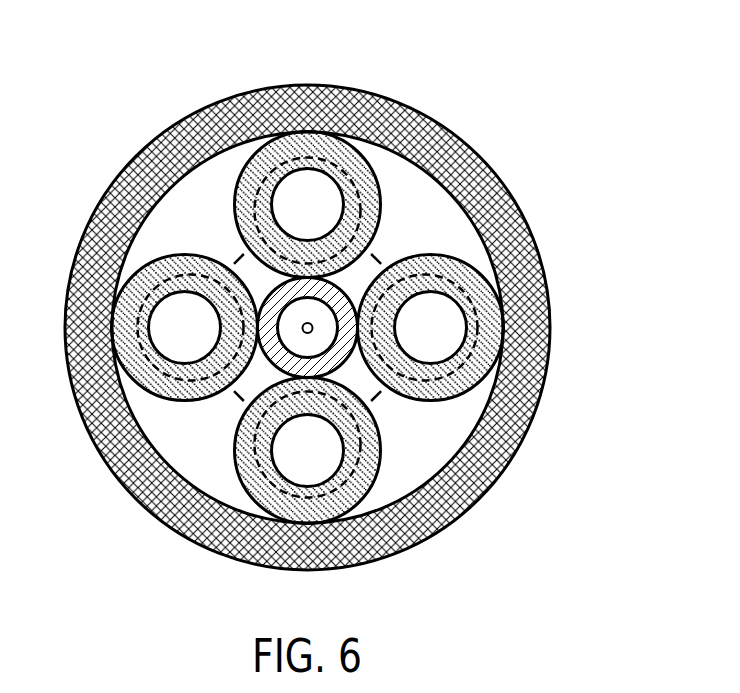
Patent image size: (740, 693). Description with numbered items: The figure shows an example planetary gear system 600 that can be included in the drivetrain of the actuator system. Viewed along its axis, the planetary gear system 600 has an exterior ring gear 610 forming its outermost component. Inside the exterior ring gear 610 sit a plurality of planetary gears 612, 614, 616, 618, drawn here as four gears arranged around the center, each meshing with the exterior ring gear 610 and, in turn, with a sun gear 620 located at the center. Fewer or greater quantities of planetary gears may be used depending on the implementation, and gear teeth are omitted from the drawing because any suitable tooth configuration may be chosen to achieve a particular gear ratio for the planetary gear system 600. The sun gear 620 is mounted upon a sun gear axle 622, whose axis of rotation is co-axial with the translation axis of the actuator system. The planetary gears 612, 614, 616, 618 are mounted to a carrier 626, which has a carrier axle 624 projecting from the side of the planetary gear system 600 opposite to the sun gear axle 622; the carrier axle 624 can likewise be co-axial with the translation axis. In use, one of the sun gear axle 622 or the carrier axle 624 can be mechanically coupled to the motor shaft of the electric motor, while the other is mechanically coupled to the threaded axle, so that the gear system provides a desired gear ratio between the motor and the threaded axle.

The planetary gear system 600 is at (524, 50).
The exterior ring gear 610 is at (475, 188).
The planetary gear 612 is at (312, 140).
The planetary gear 614 is at (488, 308).
The planetary gear 616 is at (292, 517).
The planetary gear 618 is at (130, 349).
The sun gear 620 is at (273, 303).
The sun gear axle 622 is at (304, 330).
The carrier axle 624 is at (351, 272).
The carrier 626 is at (363, 390).